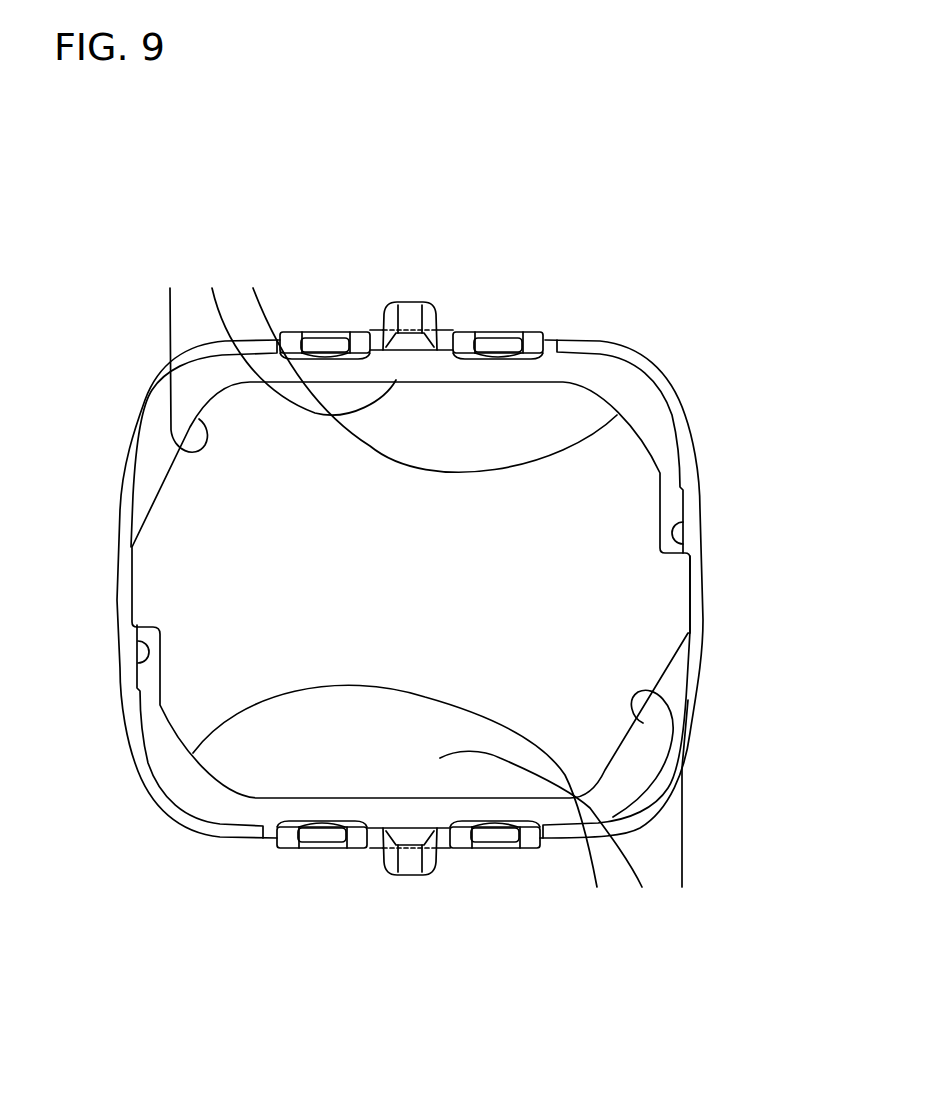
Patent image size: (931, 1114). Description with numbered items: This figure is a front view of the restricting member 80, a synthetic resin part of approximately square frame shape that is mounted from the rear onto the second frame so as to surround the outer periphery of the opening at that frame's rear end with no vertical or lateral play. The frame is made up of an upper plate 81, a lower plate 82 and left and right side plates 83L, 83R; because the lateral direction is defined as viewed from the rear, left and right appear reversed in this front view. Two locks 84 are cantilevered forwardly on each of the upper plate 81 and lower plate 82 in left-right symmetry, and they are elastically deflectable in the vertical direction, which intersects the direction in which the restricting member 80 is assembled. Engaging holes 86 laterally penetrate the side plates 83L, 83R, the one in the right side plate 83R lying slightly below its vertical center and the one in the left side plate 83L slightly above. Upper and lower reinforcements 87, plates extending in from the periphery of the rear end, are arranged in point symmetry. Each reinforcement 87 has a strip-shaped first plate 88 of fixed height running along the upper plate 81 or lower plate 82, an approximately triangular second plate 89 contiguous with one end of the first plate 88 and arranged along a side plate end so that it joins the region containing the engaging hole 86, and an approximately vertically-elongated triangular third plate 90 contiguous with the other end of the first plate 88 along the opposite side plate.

The restricting member 80 is at (693, 271).
The upper plate 81 is at (449, 328).
The lower plate 82 is at (374, 849).
The right side plate 83R is at (120, 533).
The left side plate 83L is at (702, 508).
The lock 84 is at (327, 337).
The engaging hole 86 is at (137, 641).
The reinforcement 87 is at (152, 291).
The first plate 88 is at (405, 588).
The second plate 89 is at (425, 588).
The third plate 90 is at (425, 588).